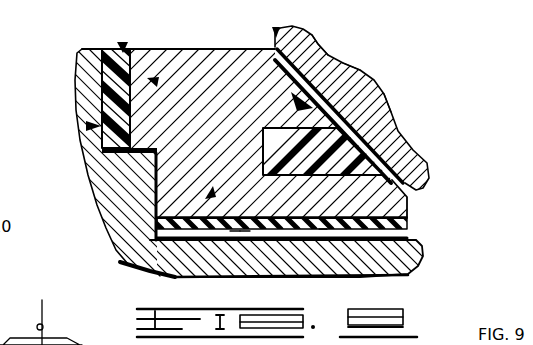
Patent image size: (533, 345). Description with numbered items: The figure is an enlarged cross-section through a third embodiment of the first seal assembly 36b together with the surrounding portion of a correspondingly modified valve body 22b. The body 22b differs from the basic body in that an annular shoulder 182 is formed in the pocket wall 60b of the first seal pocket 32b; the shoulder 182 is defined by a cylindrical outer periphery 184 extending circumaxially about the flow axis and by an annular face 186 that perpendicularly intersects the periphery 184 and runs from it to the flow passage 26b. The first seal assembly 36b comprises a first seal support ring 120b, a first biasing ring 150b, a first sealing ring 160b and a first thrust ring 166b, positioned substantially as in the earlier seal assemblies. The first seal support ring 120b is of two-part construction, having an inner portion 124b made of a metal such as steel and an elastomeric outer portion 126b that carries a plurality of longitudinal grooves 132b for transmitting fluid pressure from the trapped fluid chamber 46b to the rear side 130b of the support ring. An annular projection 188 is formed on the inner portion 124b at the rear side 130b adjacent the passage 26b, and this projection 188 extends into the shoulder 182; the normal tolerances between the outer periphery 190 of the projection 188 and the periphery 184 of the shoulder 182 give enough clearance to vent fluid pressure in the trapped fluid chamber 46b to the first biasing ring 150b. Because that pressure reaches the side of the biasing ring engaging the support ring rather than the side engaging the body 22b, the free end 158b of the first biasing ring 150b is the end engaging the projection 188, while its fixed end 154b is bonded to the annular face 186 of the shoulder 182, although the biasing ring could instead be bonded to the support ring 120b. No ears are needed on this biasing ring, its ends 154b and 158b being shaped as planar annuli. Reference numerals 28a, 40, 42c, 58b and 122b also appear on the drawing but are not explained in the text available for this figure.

The body 22b is at (98, 170).
The flow passage 26b is at (240, 22).
The base 28a is at (10, 166).
The first seal pocket 32b is at (407, 214).
The first seal assembly 36b is at (282, 28).
The retainer 40 is at (403, 148).
The spring 42c is at (44, 327).
The trapped fluid chamber 46b is at (467, 197).
The lower member 58b is at (240, 231).
The pocket wall 60b is at (150, 240).
The first seal support ring 120b is at (162, 270).
The lower housing portion 122b is at (323, 229).
The inner portion 124b is at (320, 44).
The outer portion 126b is at (392, 234).
The rear side 130b is at (156, 212).
The longitudinal grooves 132b is at (240, 231).
The first biasing ring 150b is at (121, 46).
The fixed end 154b is at (101, 82).
The free end 158b is at (129, 47).
The first sealing ring 160b is at (312, 70).
The first thrust ring 166b is at (388, 114).
The annular shoulder 182 is at (88, 126).
The cylindrical outer periphery 184 is at (110, 149).
The annular face 186 is at (101, 48).
The annular projection 188 is at (183, 48).
The outer periphery 190 is at (156, 205).